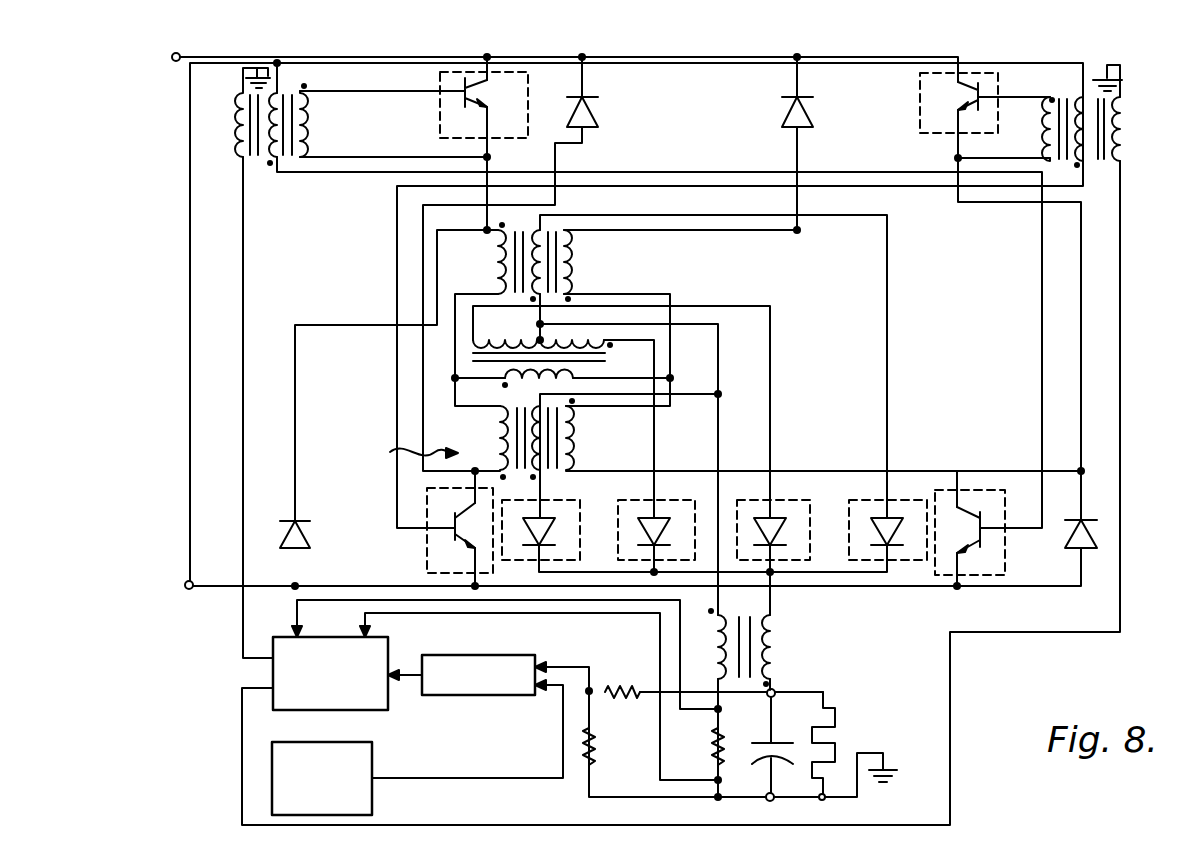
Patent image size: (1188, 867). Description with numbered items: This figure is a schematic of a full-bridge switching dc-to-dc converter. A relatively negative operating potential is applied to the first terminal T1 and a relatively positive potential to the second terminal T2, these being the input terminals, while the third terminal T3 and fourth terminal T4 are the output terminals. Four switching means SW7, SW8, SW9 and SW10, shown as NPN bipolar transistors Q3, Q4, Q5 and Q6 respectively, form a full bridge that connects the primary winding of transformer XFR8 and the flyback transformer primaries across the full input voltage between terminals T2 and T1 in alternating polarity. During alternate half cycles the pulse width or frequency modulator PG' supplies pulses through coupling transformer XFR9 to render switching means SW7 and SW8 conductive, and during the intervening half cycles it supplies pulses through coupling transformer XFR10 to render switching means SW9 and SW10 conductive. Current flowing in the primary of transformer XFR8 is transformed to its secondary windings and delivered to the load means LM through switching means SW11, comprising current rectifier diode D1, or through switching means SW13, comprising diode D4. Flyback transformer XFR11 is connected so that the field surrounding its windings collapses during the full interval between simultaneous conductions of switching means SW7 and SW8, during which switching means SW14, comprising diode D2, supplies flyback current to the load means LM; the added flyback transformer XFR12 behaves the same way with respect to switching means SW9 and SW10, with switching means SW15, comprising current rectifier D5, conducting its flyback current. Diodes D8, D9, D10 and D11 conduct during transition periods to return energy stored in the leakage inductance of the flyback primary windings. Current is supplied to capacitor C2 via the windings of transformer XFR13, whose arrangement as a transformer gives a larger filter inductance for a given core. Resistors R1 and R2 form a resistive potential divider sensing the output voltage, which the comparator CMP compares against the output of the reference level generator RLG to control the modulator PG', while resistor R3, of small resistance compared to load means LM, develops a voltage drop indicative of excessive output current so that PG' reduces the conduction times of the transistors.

The first terminal T1 is at (189, 589).
The second terminal T2 is at (179, 61).
The third terminal T3 is at (773, 794).
The fourth terminal T4 is at (774, 690).
The transformer XFR8 is at (498, 402).
The coupling transformer XFR9 is at (352, 89).
The coupling transformer XFR10 is at (1057, 95).
The flyback transformer XFR11 is at (489, 262).
The flyback transformer XFR12 is at (480, 436).
The transformer XFR13 is at (866, 629).
The switching means SW7 is at (440, 76).
The switching means SW8 is at (1005, 573).
The switching means SW9 is at (920, 89).
The switching means SW10 is at (428, 562).
The switching means SW11 is at (664, 500).
The switching means SW13 is at (784, 500).
The switching means SW14 is at (936, 505).
The switching means SW15 is at (548, 499).
The NPN bipolar transistor Q3 is at (505, 107).
The NPN bipolar transistor Q4 is at (969, 544).
The NPN bipolar transistor Q5 is at (958, 107).
The NPN bipolar transistor Q6 is at (489, 540).
The current rectifier diode D1 is at (663, 540).
The current rectifier diode D2 is at (896, 540).
The current rectifier diode D4 is at (780, 540).
The current rectifier diode D5 is at (548, 540).
The diode D8 is at (598, 110).
The diode D9 is at (308, 535).
The diode D10 is at (813, 110).
The diode D11 is at (1096, 535).
The resistor R1 is at (622, 704).
The resistor R2 is at (603, 747).
The resistor R3 is at (705, 746).
The capacitor C2 is at (786, 747).
The load means LM is at (835, 722).
The comparator CMP is at (466, 695).
The pulse width or frequency modulator PG' is at (318, 659).
The reference level generator RLG is at (372, 752).